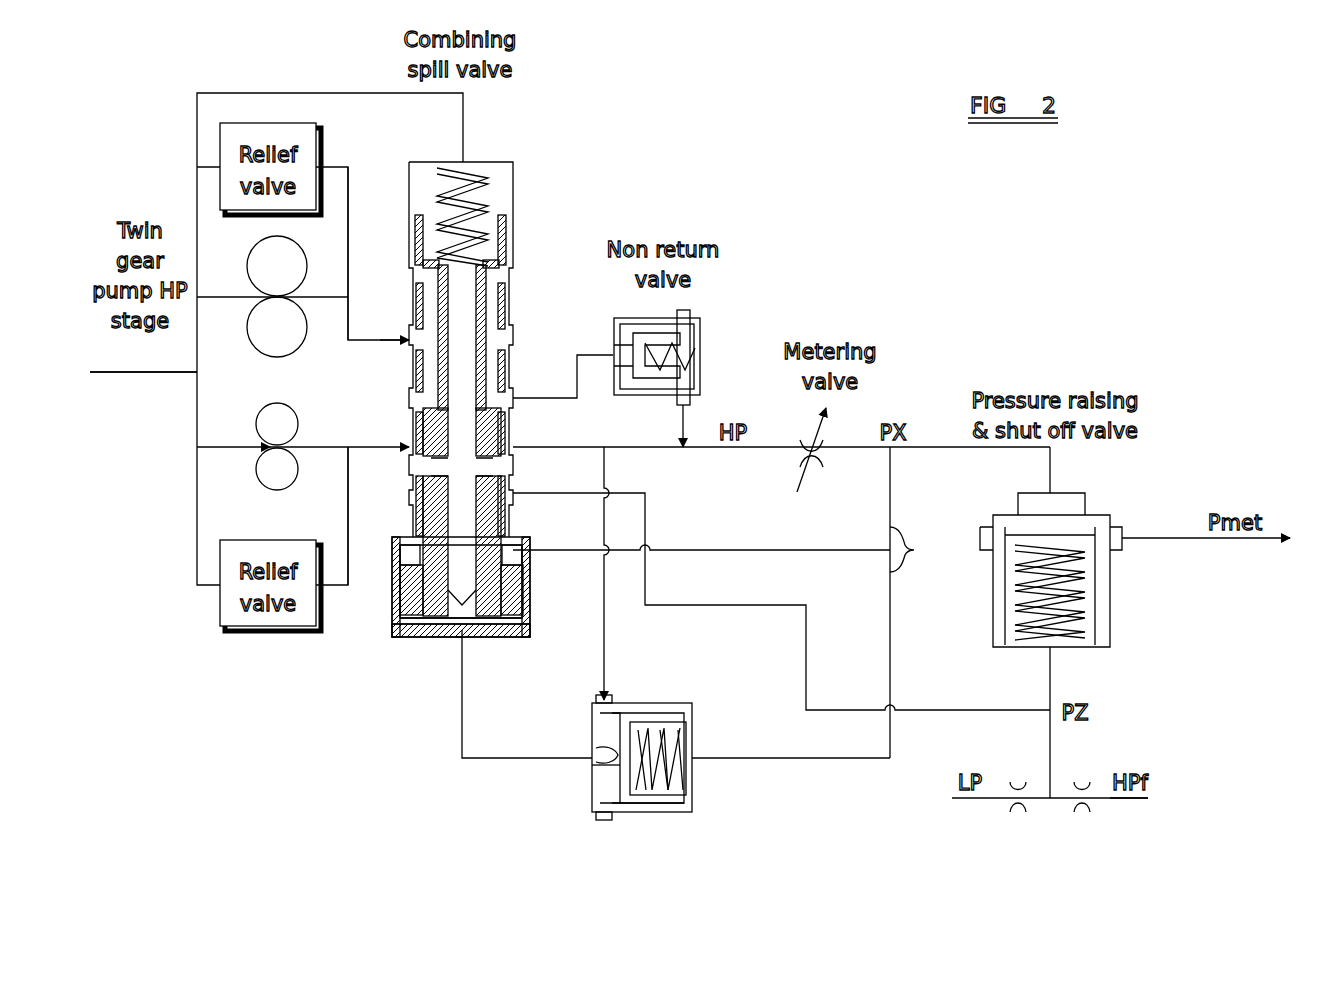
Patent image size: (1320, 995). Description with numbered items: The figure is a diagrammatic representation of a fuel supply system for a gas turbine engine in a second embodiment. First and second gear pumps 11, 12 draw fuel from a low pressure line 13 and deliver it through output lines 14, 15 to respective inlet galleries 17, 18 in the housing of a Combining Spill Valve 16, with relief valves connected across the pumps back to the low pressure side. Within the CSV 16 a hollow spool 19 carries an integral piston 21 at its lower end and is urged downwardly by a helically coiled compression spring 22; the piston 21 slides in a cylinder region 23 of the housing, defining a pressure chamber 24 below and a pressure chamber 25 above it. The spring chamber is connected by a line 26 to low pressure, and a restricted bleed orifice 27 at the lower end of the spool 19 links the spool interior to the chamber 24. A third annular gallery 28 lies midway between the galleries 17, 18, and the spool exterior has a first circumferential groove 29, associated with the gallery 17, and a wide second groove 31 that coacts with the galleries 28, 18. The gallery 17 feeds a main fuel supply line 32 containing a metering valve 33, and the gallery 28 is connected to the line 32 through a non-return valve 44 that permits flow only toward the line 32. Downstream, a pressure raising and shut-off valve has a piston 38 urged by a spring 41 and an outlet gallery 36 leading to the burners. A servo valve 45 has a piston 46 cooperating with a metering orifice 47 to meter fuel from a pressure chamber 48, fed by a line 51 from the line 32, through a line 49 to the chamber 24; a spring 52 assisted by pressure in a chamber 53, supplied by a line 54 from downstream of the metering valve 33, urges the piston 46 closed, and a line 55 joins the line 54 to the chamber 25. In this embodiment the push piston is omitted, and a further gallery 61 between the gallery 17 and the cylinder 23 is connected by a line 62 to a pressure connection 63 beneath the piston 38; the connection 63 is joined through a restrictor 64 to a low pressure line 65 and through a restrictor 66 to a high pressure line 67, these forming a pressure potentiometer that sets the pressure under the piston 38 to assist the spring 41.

The first gear pump 11 is at (277, 470).
The second gear pump 12 is at (258, 264).
The low pressure line 13 is at (197, 349).
The output line 14 is at (362, 452).
The output line 15 is at (362, 318).
The Combining Spill Valve 16 is at (508, 160).
The inlet gallery 17 is at (410, 463).
The inlet gallery 18 is at (405, 350).
The spool 19 is at (508, 420).
The piston 21 is at (407, 637).
The compression spring 22 is at (440, 185).
The cylinder region 23 is at (528, 615).
The pressure chamber 24 is at (486, 634).
The pressure chamber 25 is at (506, 552).
The line 26 is at (250, 93).
The bleed orifice 27 is at (455, 637).
The annular gallery 28 is at (408, 397).
The first circumferential groove 29 is at (493, 470).
The second circumferential groove 31 is at (505, 303).
The main fuel supply line 32 is at (758, 450).
The metering valve 33 is at (810, 445).
The outlet gallery 36 is at (1122, 542).
The piston 38 is at (1090, 608).
The spring 41 is at (1108, 561).
The non-return valve 44 is at (700, 318).
The servo valve 45 is at (632, 779).
The piston 46 is at (637, 797).
The metering orifice 47 is at (596, 770).
The pressure chamber 48 is at (597, 793).
The line 49 is at (478, 758).
The line 51 is at (605, 655).
The spring 52 is at (672, 782).
The chamber 53 is at (690, 720).
The line 54 is at (914, 550).
The line 55 is at (805, 552).
The gallery 61 is at (512, 504).
The line 62 is at (840, 710).
The pressure connection 63 is at (1055, 672).
The restrictor 64 is at (1018, 812).
The low pressure line 65 is at (975, 800).
The restrictor 66 is at (1082, 812).
The high pressure line 67 is at (1120, 800).